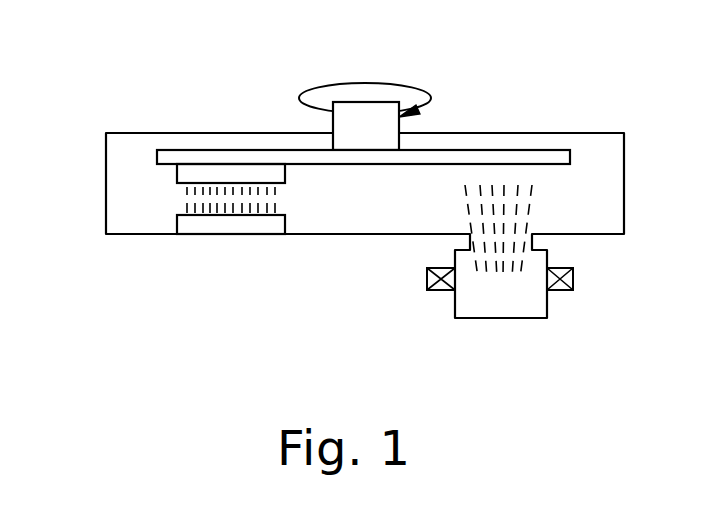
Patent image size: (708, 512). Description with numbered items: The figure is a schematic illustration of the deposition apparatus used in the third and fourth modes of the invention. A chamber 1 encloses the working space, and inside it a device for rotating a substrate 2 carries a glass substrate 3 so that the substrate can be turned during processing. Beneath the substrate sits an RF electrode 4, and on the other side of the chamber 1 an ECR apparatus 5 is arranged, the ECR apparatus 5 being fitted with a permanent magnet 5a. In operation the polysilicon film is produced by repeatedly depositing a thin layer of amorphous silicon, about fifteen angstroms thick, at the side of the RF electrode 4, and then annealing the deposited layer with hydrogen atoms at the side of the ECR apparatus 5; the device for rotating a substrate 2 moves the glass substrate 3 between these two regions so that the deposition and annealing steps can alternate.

The chamber 1 is at (597, 195).
The device for rotating a substrate 2 is at (390, 102).
The glass substrate 3 is at (178, 173).
The RF electrode 4 is at (230, 227).
The ECR apparatus 5 is at (573, 278).
The permanent magnet 5a is at (435, 290).